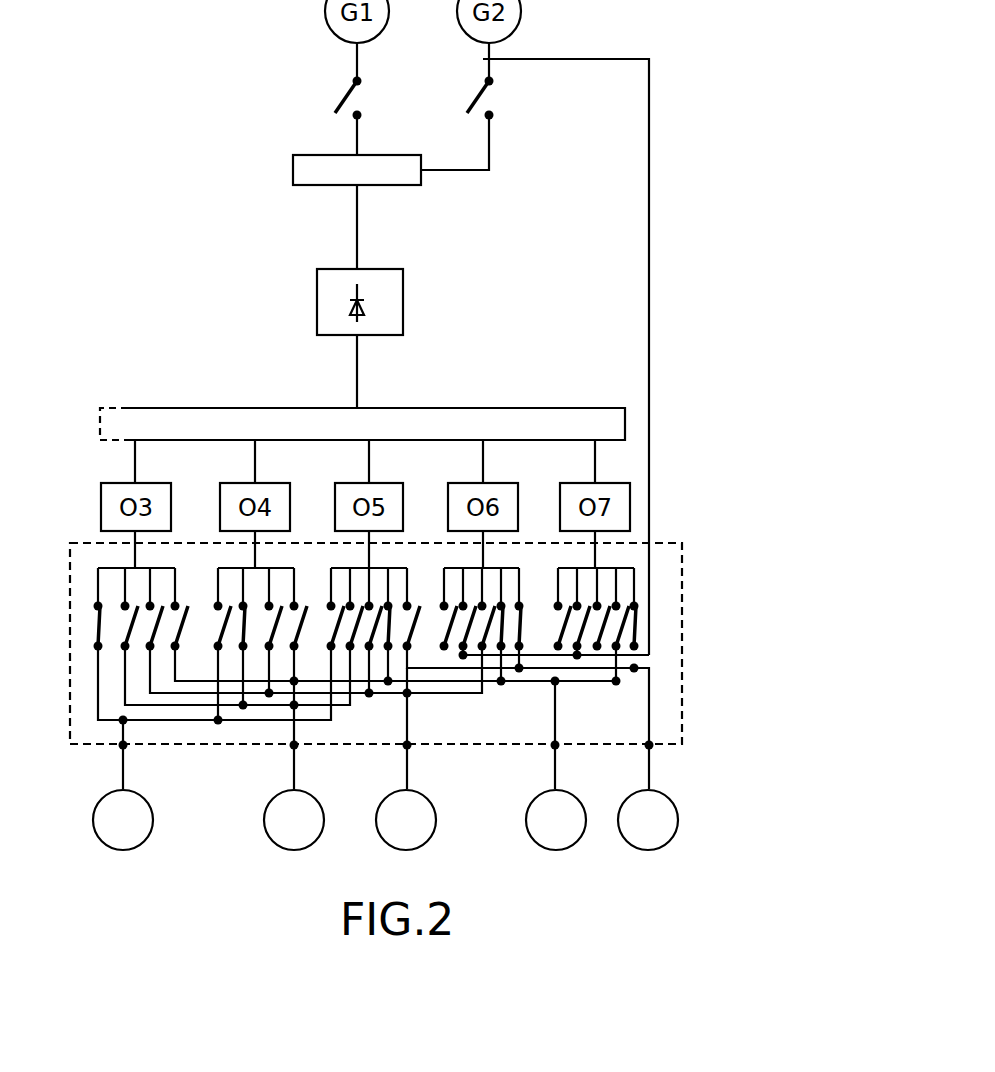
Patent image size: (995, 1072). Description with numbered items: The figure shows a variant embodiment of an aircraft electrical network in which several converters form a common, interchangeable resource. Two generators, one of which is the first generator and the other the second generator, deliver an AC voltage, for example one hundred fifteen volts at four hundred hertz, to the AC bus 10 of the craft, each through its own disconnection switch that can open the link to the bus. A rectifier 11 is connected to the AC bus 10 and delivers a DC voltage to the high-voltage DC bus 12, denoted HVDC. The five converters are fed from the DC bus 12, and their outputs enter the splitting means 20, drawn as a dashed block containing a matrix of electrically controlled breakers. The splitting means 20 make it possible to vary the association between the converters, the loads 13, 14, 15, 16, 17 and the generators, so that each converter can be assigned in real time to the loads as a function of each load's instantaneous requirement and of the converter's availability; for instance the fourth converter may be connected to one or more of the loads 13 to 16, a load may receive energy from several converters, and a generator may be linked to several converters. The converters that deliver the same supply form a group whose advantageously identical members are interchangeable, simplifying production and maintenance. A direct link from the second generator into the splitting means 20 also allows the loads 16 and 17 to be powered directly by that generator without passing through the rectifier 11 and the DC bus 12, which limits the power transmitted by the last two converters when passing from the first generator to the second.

The AC bus 10 is at (293, 170).
The rectifier 11 is at (403, 315).
The high-voltage DC bus 12 is at (530, 408).
The splitting means 20 is at (682, 552).
The load 13 is at (123, 785).
The load 14 is at (294, 797).
The load 15 is at (406, 797).
The load 16 is at (556, 797).
The load 17 is at (648, 797).